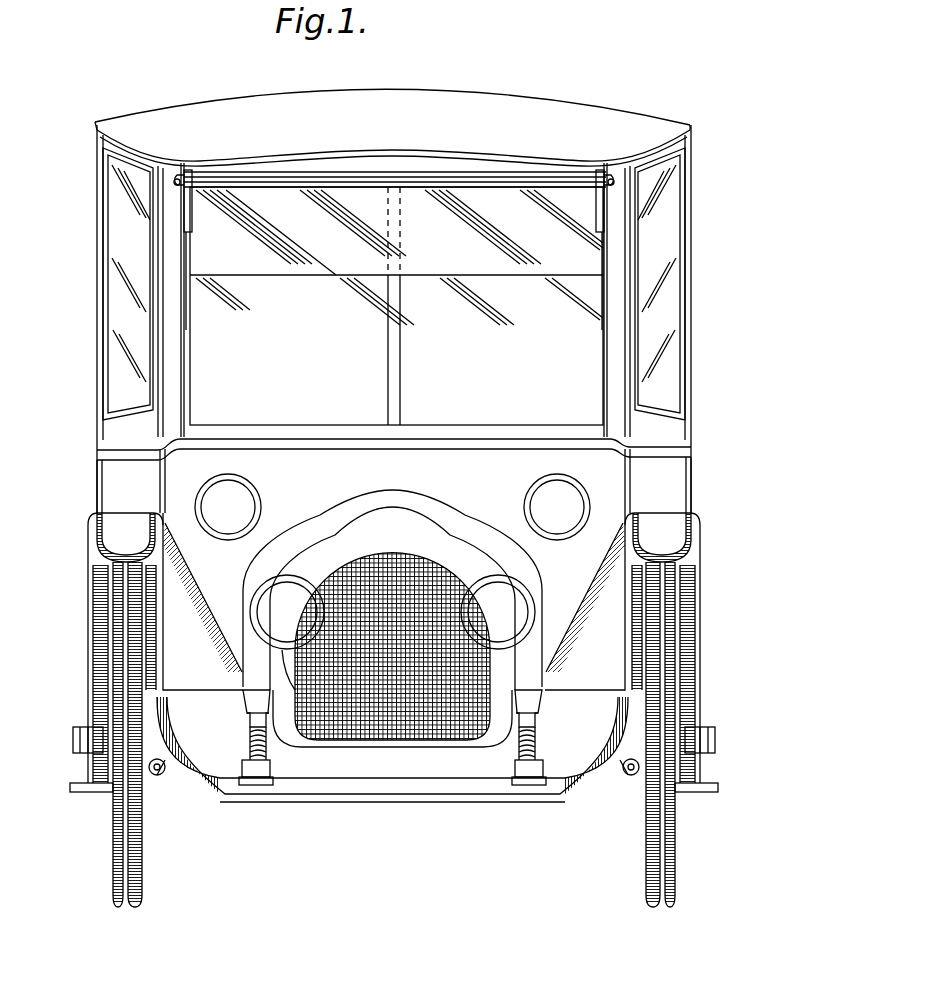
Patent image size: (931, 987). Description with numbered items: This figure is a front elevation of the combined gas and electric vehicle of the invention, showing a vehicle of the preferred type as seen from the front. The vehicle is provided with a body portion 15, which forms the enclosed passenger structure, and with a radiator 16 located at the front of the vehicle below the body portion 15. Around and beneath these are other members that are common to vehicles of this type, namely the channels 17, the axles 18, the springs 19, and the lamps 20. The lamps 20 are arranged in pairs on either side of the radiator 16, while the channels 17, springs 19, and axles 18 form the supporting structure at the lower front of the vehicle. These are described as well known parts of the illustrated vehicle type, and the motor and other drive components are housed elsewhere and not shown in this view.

The body portion 15 is at (603, 482).
The radiator 16 is at (357, 727).
The channels 17 is at (255, 700).
The axles 18 is at (465, 792).
The springs 19 is at (260, 767).
The lamps 20 is at (272, 607).